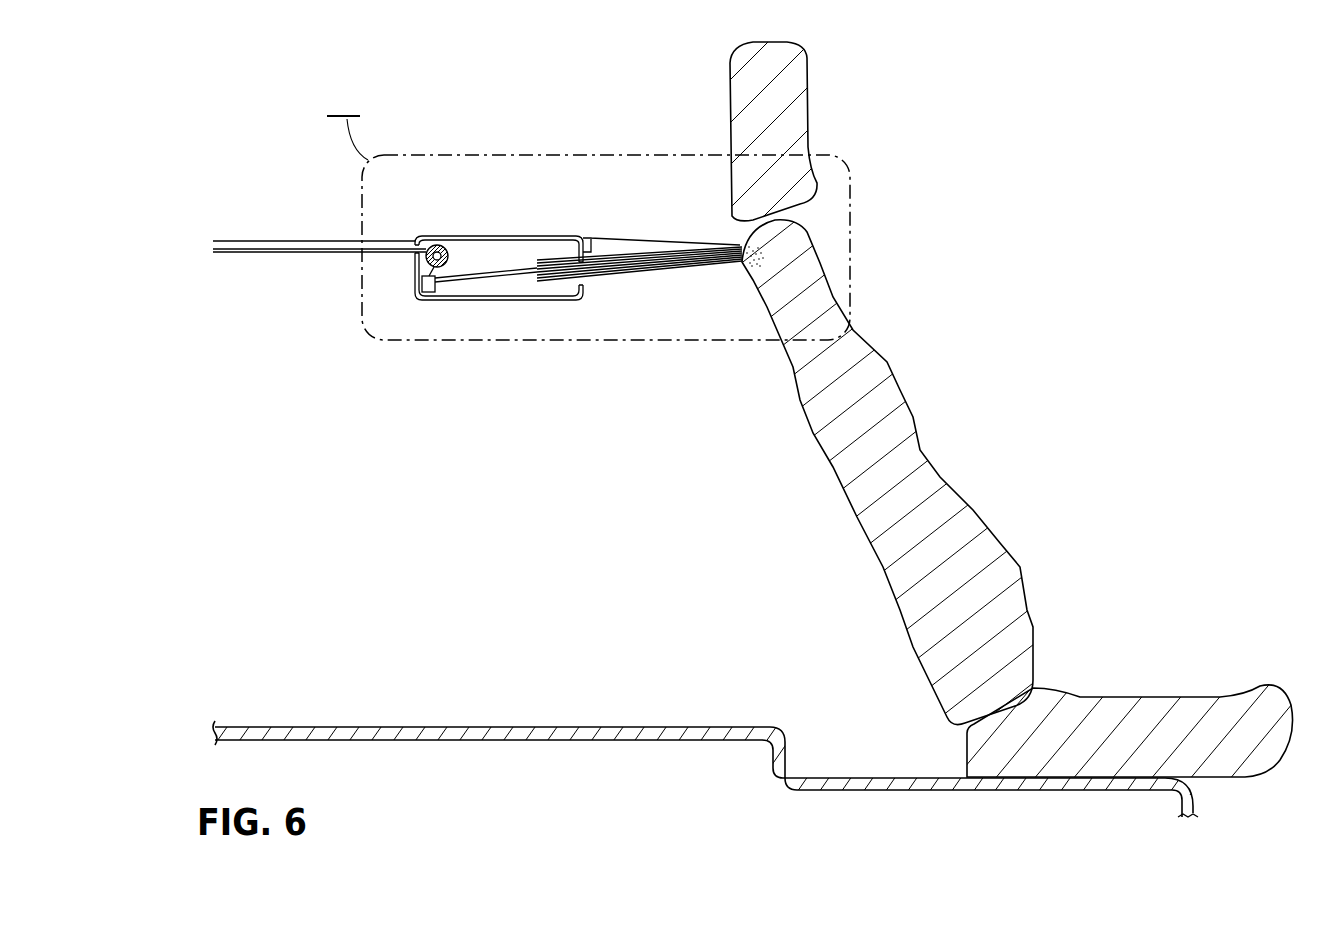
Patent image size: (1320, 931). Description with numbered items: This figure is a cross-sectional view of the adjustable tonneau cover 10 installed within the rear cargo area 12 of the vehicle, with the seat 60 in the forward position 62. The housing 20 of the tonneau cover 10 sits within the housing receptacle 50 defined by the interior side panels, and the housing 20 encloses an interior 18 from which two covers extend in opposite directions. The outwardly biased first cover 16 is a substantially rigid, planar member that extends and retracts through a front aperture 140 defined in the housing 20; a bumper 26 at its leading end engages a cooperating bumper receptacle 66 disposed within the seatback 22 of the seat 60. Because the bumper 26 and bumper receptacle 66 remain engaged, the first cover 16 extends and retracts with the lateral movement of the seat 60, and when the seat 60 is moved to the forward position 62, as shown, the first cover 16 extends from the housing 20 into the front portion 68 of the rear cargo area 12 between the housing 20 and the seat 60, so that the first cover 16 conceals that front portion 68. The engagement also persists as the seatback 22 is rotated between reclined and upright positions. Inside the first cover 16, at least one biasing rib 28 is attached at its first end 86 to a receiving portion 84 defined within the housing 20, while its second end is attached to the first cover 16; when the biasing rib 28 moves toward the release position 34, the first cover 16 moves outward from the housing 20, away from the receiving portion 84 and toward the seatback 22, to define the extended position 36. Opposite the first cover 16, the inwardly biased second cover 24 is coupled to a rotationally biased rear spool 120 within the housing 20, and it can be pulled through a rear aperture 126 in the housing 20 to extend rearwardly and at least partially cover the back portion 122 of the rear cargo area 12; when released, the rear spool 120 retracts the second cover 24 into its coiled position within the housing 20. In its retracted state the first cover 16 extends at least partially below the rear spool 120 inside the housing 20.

The adjustable tonneau cover 10 is at (516, 176).
The rear cargo area 12 is at (508, 752).
The first cover 16 is at (645, 287).
The interior 18 is at (467, 304).
The housing 20 is at (540, 235).
The seatback 22 is at (833, 477).
The second cover 24 is at (262, 238).
The bumper 26 is at (747, 262).
The biasing rib 28 is at (513, 283).
The release position 34 is at (487, 268).
The extended position 36 is at (667, 243).
The housing receptacle 50 is at (420, 274).
The seat 60 is at (1107, 693).
The forward position 62 is at (1030, 612).
The bumper receptacle 66 is at (750, 250).
The front portion 68 is at (821, 761).
The receiving portion 84 is at (413, 283).
The first end 86 is at (413, 268).
The rear spool 120 is at (433, 245).
The back portion 122 is at (288, 713).
The rear aperture 126 is at (413, 257).
The front aperture 140 is at (587, 233).